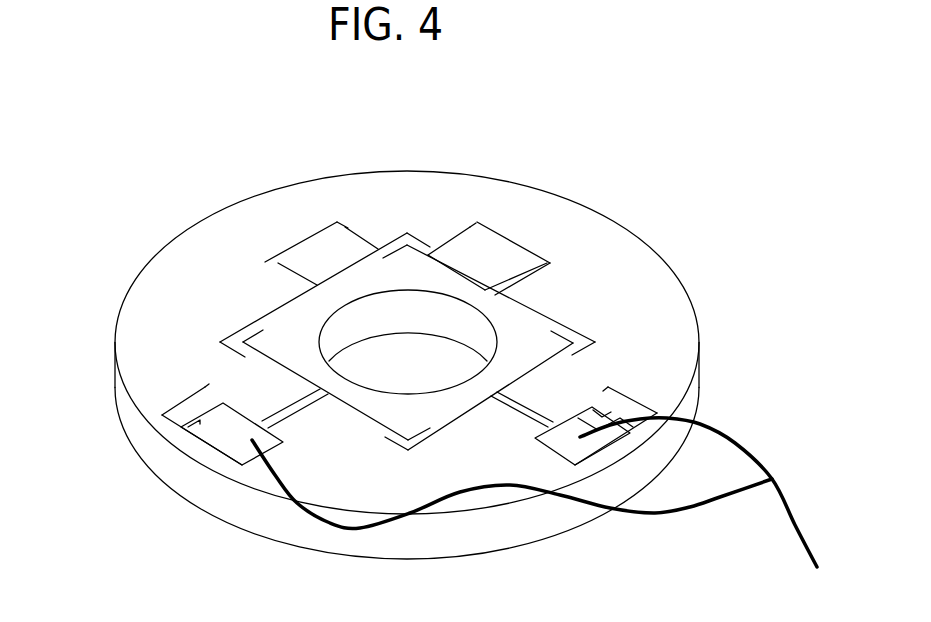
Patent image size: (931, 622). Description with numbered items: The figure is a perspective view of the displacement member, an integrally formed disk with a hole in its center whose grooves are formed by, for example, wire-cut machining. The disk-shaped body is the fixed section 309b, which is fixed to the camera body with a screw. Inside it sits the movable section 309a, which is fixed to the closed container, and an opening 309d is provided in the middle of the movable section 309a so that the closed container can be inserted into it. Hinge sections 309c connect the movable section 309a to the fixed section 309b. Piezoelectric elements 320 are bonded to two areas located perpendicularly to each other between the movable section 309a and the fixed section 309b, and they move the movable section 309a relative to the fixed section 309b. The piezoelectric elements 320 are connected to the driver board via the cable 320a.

The movable section 309a is at (398, 263).
The fixed section 309b is at (617, 262).
The hinge sections 309c is at (213, 423).
The opening 309d is at (377, 317).
The piezoelectric elements 320 is at (225, 440).
The cable 320a is at (795, 527).